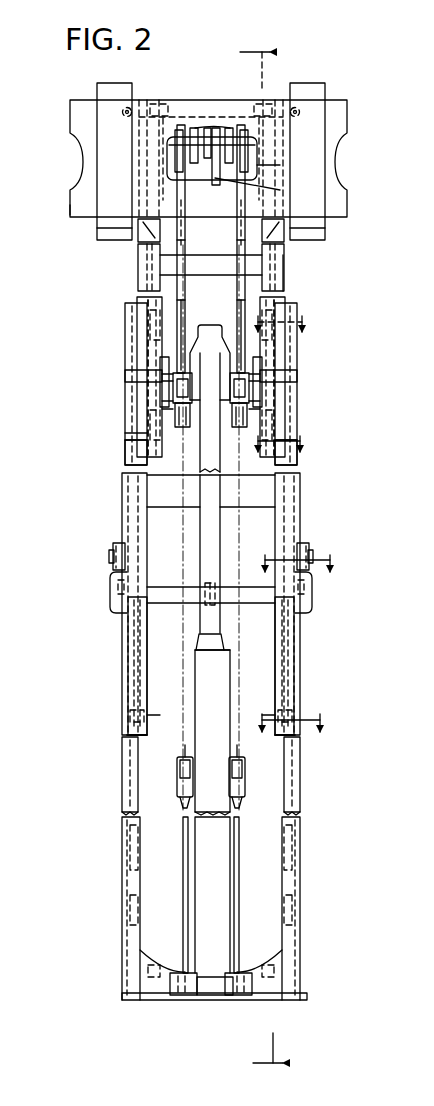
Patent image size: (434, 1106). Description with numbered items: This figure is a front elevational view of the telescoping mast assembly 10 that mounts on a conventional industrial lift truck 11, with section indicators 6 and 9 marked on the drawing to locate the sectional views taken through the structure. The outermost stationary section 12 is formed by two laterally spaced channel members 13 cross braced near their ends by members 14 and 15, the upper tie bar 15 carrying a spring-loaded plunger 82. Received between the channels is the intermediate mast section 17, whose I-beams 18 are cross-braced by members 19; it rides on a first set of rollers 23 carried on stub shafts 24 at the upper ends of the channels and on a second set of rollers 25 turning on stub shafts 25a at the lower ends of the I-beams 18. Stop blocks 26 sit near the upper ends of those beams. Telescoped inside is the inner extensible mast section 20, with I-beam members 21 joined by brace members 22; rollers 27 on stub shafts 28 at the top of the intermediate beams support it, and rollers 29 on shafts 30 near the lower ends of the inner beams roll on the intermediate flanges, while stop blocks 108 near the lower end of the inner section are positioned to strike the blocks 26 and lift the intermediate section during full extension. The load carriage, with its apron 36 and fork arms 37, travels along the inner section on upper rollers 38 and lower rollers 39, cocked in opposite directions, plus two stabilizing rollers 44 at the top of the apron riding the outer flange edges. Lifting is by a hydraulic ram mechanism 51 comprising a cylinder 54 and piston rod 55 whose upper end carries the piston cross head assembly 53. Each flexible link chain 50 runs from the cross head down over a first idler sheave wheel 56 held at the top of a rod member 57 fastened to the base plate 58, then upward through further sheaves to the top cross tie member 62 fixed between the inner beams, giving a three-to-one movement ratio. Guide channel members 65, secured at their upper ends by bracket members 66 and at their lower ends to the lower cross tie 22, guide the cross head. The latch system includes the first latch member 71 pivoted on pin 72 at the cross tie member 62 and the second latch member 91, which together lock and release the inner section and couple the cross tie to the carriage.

The section line 6- 6 is at (261, 559).
The section line 9- 9 is at (285, 318).
The mast assembly 10 is at (280, 443).
The industrial lift truck 11 is at (304, 555).
The stationary section 12 is at (295, 715).
The channel members 13 is at (122, 775).
The cross brace member 14 is at (152, 990).
The cross brace member 15 is at (163, 606).
The intermediate mast section 17 is at (306, 481).
The I-beams 18 is at (126, 504).
The cross brace members 19 is at (165, 378).
The inner extensible mast section 20 is at (288, 262).
The I-beam members 21 is at (283, 300).
The brace members 22 is at (158, 262).
The rollers 23 is at (120, 550).
The stub shafts 24 is at (114, 569).
The rollers 25 is at (128, 712).
The stub shafts 25a is at (125, 734).
The stop blocks 26 is at (137, 355).
The rollers 27 is at (135, 330).
The stub shafts 28 is at (127, 316).
The rollers 29 is at (133, 434).
The shafts 30 is at (130, 450).
The apron 36 is at (70, 208).
The fork arms 37 is at (335, 198).
The rollers 38 is at (152, 104).
The rollers 39 is at (135, 240).
The stabilizing rollers 44 is at (122, 108).
The flexible link chains 50 is at (183, 712).
The hydraulic ram mechanism 51 is at (233, 670).
The piston cross head assembly 53 is at (200, 418).
The cylinder 54 is at (205, 692).
The piston rod 55 is at (208, 529).
The first idler sheave wheels 56 is at (178, 771).
The rod members 57 is at (184, 884).
The base plate 58 is at (238, 996).
The top cross tie member 62 is at (186, 178).
The channel members 65 is at (184, 312).
The bracket members 66 is at (185, 225).
The first latch member 71 is at (218, 175).
The pin 72 is at (200, 125).
The spring-loaded plunger 82 is at (222, 592).
The latch member 91 is at (281, 165).
The stop blocks 108 is at (140, 380).